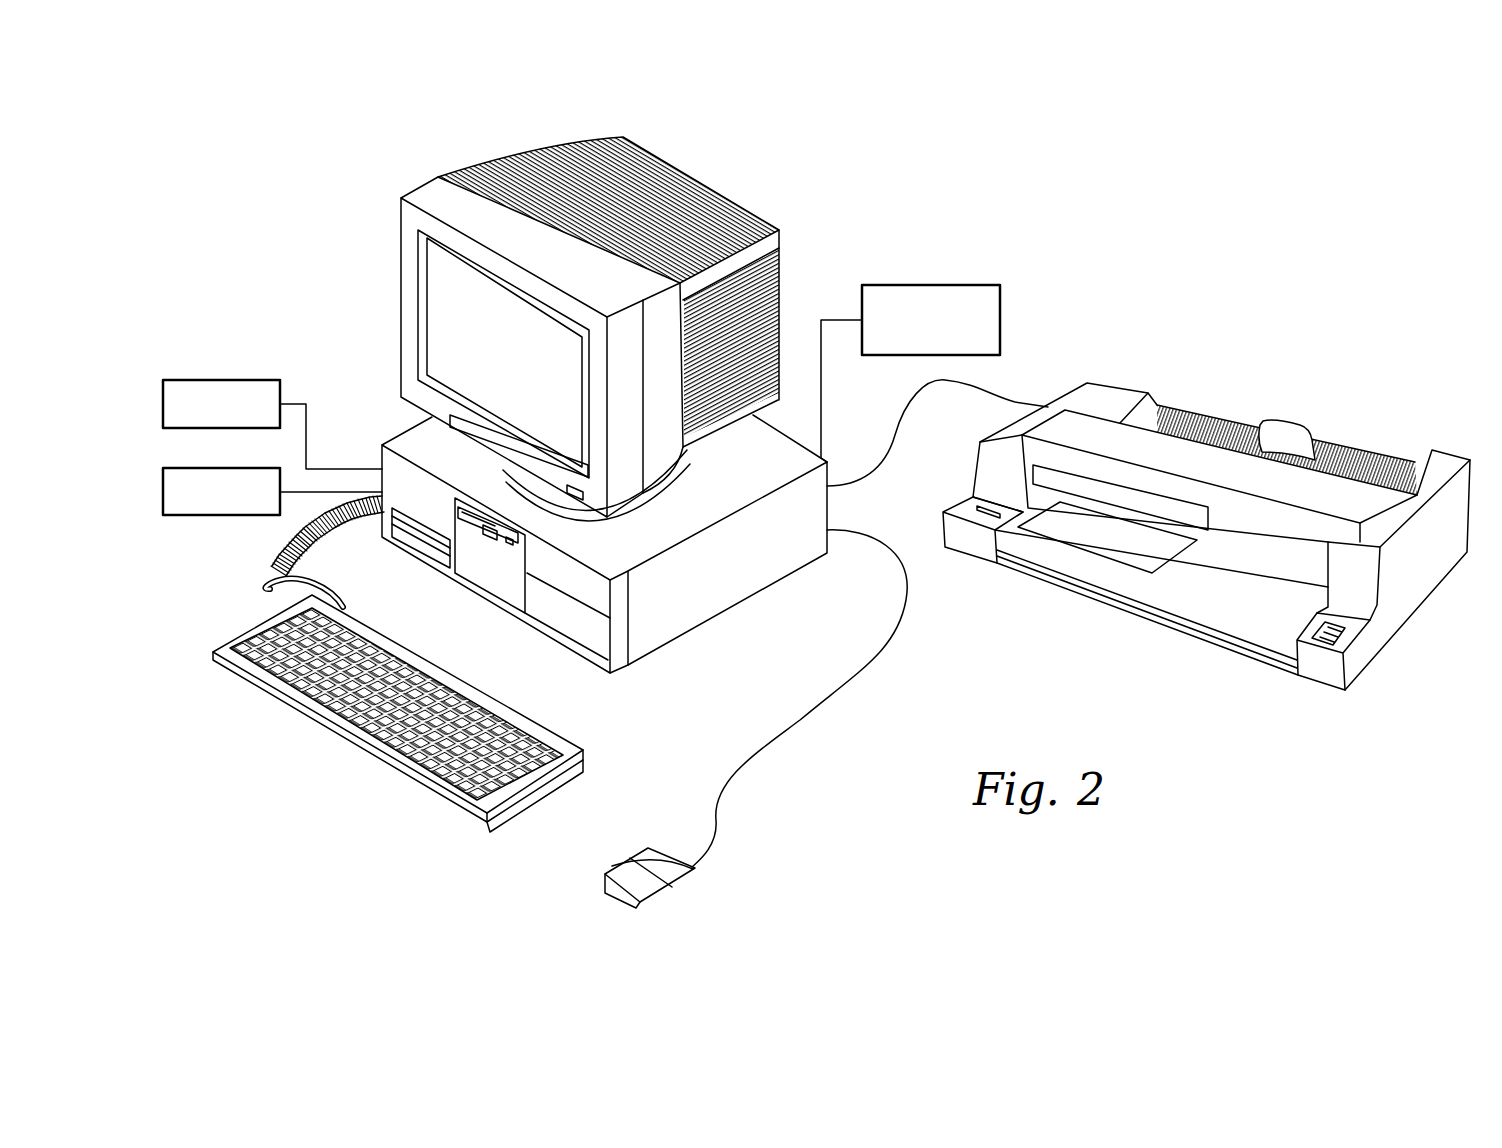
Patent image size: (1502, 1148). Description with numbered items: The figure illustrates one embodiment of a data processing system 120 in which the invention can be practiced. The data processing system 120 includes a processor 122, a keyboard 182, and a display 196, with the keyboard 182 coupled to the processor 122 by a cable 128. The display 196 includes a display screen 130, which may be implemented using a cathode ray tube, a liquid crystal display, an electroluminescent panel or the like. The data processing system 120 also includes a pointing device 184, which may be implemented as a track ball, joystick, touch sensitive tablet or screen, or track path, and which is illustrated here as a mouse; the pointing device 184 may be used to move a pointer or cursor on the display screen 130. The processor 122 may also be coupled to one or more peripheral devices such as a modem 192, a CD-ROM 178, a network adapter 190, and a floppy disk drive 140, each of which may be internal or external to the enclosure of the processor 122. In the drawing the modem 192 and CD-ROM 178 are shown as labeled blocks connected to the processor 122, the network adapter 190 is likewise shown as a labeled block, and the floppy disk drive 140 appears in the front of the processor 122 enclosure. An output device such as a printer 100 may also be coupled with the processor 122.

The printer 100 is at (1156, 367).
The data processing system 120 is at (990, 187).
The processor 122 is at (604, 562).
The cable 128 is at (290, 548).
The display screen 130 is at (532, 365).
The floppy disk drive 140 is at (485, 533).
The CD-ROM 178 is at (213, 468).
The keyboard 182 is at (368, 758).
The pointing device 184 is at (690, 880).
The network adapter 190 is at (1000, 300).
The modem 192 is at (213, 380).
The display 196 is at (521, 329).